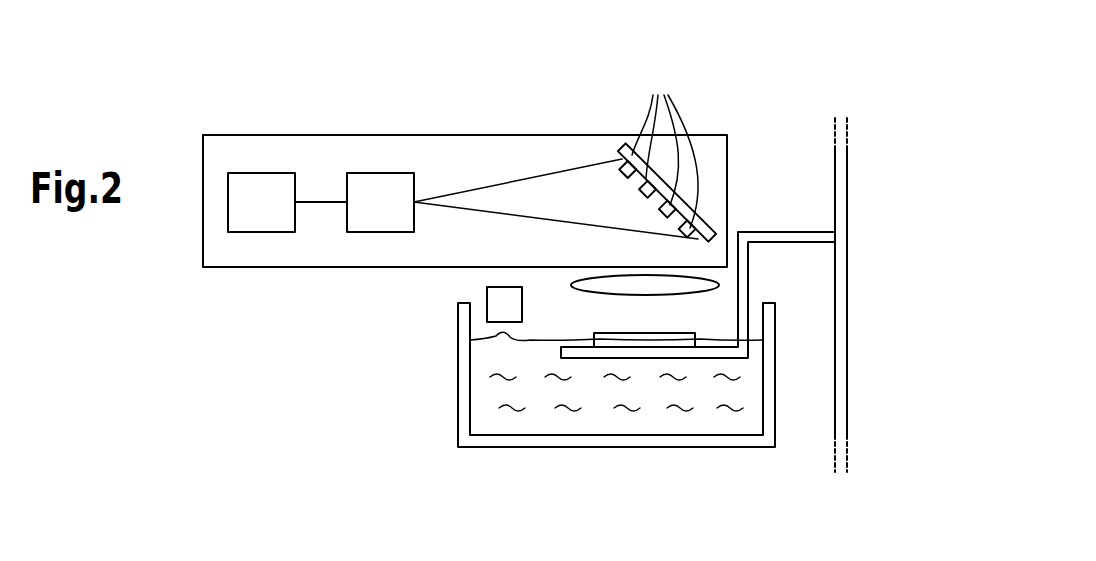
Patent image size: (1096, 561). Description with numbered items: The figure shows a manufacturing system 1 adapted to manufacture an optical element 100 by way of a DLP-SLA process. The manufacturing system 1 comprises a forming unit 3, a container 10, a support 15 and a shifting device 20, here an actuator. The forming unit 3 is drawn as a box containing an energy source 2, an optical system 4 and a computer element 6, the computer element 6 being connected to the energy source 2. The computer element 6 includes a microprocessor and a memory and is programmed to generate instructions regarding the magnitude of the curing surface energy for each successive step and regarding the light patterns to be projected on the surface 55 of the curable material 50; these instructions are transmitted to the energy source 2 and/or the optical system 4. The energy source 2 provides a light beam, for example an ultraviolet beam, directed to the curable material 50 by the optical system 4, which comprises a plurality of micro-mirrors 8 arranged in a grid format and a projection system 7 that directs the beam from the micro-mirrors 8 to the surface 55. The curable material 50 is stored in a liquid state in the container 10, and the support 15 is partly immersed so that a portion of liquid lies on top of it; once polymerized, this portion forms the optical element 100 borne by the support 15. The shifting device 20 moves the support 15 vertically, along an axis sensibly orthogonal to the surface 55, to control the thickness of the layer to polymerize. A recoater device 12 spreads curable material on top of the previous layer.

The manufacturing system 1 is at (890, 139).
The energy source 2 is at (389, 173).
The forming unit 3 is at (736, 141).
The optical system 4 is at (687, 58).
The computer element 6 is at (272, 173).
The projection system 7 is at (597, 276).
The micro-mirrors 8 is at (665, 146).
The container 10 is at (717, 440).
The recoater device 12 is at (487, 293).
The support 15 is at (585, 349).
The shifting device 20 is at (838, 287).
The curable material 50 is at (550, 422).
The surface 55 is at (503, 332).
The optical element 100 is at (625, 339).